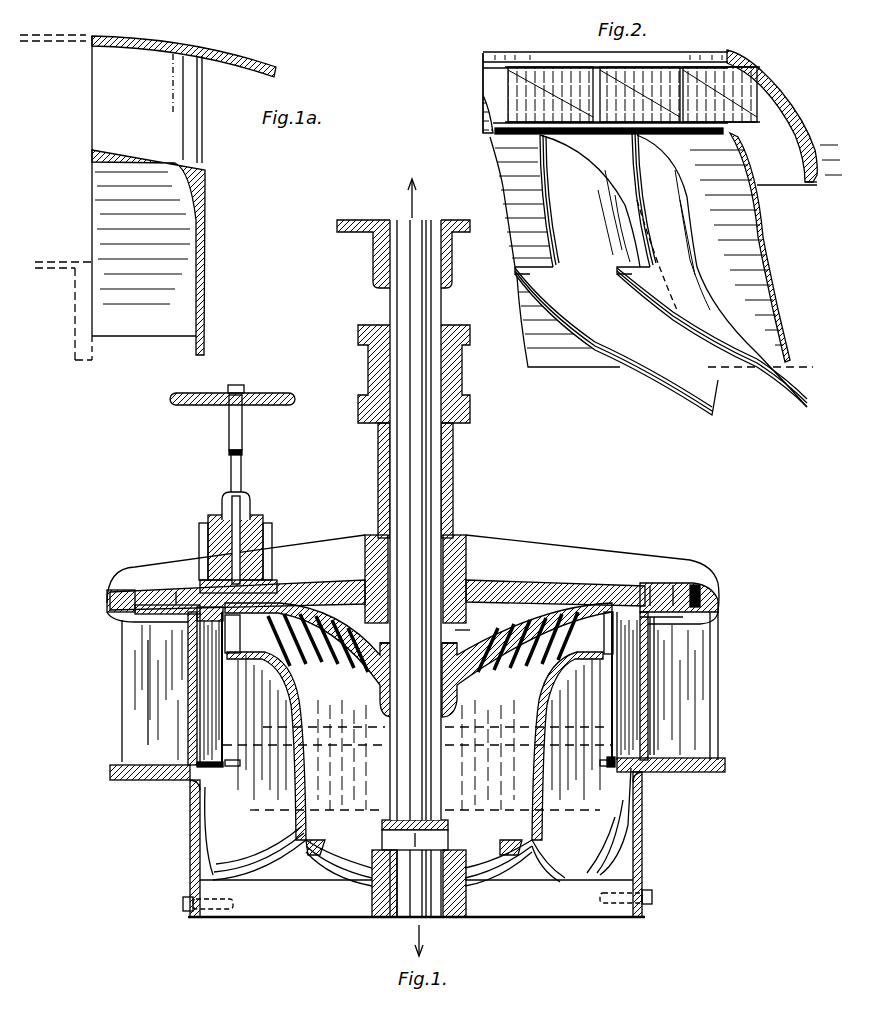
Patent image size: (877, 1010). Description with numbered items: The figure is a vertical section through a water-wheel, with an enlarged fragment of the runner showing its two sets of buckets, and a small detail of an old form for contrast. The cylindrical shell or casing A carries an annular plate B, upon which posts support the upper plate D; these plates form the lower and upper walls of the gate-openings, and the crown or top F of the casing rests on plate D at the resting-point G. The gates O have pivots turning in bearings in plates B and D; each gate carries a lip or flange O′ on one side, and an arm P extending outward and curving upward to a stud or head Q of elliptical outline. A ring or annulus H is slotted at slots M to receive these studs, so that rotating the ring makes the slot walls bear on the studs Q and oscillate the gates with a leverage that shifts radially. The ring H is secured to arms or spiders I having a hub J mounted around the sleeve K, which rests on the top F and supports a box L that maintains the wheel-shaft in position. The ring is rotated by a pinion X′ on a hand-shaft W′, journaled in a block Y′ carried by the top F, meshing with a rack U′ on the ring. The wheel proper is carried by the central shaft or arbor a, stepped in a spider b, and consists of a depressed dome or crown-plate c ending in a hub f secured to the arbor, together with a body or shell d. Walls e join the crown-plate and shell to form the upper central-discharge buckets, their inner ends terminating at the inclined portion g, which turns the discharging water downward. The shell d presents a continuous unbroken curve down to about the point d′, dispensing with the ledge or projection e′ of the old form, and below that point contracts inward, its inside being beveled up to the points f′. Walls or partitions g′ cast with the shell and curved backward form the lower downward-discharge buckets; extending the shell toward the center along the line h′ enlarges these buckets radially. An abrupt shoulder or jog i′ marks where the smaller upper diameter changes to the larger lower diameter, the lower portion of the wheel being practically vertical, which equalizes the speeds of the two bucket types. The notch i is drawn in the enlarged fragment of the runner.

In FIG. 1, the central shaft or arbor a is at (403, 567).
In FIG. 1, the box L is at (366, 377).
In FIG. 1, the sleeve K is at (378, 470).
In FIG. 1, the hub J is at (364, 556).
In FIG. 1, the crown or top F is at (575, 546).
In FIG. 1, the arms or spiders I is at (320, 548).
In FIG. 1, the slots M is at (136, 592).
In FIG. 1, the stud or head Q is at (107, 603).
In FIG. 1, the ring or annulus H is at (176, 594).
In FIG. 1, the resting-point G is at (662, 579).
In FIG. 1A, the upper plate D is at (36, 37).
In FIG. 1, the upper plate D is at (107, 612).
In FIG. 1, the hand-shaft W′ is at (243, 452).
In FIG. 1, the pinion X′ is at (263, 526).
In FIG. 1, the rack U′ is at (203, 530).
In FIG. 1, the block Y′ is at (280, 586).
In FIG. 1, the gates O is at (420, 688).
In FIG. 1, the gate arm P is at (158, 640).
In FIG. 1, the lip or flange O′ is at (189, 762).
In FIG. 1A, the annular plate B is at (56, 262).
In FIG. 1, the annular plate B is at (108, 772).
In FIG. 1, the cylindrical shell or casing A is at (190, 838).
In FIG. 1, the spider b is at (417, 895).
In FIG. 2, the walls e is at (632, 94).
In FIG. 1, the walls e is at (260, 648).
In FIG. 1A, the ledge or projection e′ is at (208, 172).
In FIG. 2, the depressed dome or crown-plate c is at (790, 95).
In FIG. 1, the depressed dome or crown-plate c is at (418, 660).
In FIG. 2, the inclined termination of the walls g is at (752, 134).
In FIG. 1, the inclined termination of the walls g is at (330, 672).
In FIG. 2, the body or shell d is at (770, 254).
In FIG. 1, the body or shell d is at (290, 742).
In FIG. 1, the point where the curve terminates d′ is at (298, 726).
In FIG. 1, the dividing line h′ is at (418, 755).
In FIG. 1, the hub f is at (423, 677).
In FIG. 1, the points of bevel f′ is at (316, 824).
In FIG. 2, the walls or partitions g′ is at (661, 274).
In FIG. 1, the walls or partitions g′ is at (418, 825).
In FIG. 2, the abrupt shoulder or jog i′ is at (545, 272).
In FIG. 1, the abrupt shoulder or jog i′ is at (225, 766).
In FIG. 2, the bucket notch i is at (633, 278).